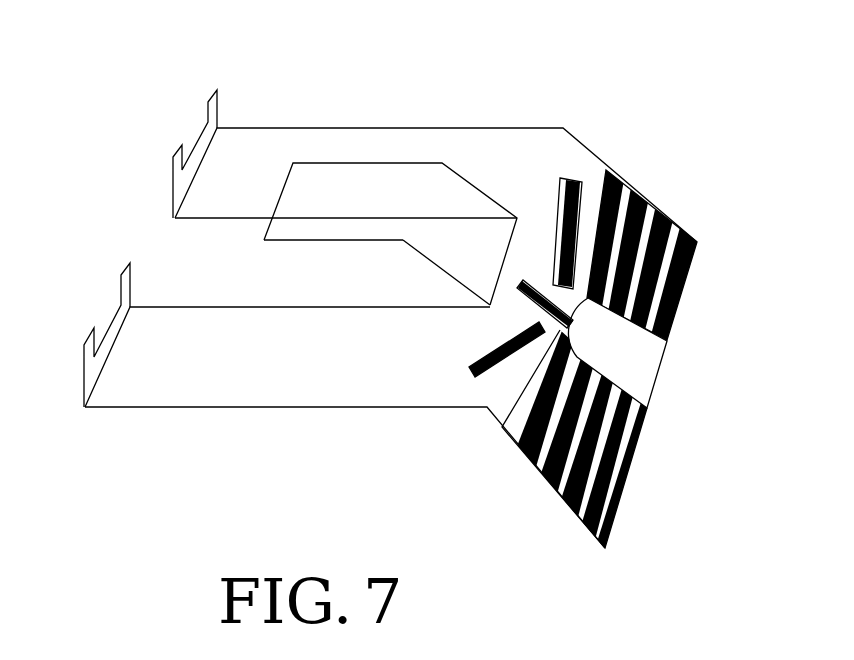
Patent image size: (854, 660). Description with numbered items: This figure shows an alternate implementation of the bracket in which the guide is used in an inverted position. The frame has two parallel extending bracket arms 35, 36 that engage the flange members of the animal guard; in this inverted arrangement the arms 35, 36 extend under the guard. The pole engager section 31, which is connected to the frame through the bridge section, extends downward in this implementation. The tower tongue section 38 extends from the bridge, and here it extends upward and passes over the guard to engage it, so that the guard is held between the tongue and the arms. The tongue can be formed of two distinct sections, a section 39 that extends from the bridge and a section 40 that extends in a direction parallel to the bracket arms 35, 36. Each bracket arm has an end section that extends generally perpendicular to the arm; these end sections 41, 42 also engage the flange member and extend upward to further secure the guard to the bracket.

The pole engager section 31 is at (645, 347).
The bracket arm 35 is at (436, 150).
The bracket arm 36 is at (243, 412).
The tower tongue section 38 is at (417, 265).
The tongue section 39 is at (449, 276).
The tongue section 40 is at (305, 245).
The end section 41 is at (246, 122).
The end section 42 is at (75, 375).